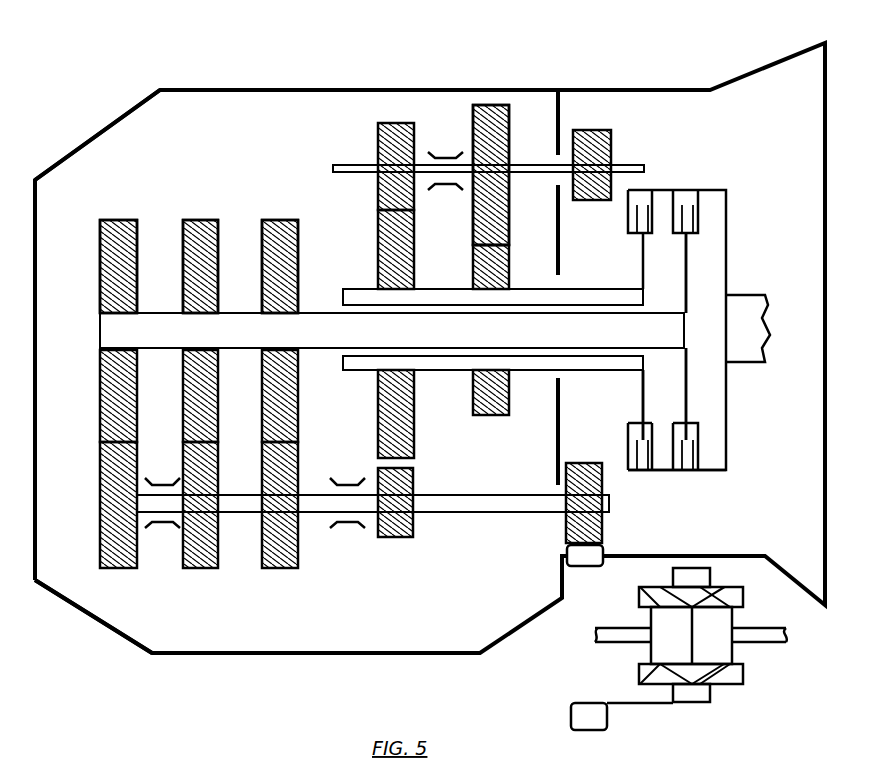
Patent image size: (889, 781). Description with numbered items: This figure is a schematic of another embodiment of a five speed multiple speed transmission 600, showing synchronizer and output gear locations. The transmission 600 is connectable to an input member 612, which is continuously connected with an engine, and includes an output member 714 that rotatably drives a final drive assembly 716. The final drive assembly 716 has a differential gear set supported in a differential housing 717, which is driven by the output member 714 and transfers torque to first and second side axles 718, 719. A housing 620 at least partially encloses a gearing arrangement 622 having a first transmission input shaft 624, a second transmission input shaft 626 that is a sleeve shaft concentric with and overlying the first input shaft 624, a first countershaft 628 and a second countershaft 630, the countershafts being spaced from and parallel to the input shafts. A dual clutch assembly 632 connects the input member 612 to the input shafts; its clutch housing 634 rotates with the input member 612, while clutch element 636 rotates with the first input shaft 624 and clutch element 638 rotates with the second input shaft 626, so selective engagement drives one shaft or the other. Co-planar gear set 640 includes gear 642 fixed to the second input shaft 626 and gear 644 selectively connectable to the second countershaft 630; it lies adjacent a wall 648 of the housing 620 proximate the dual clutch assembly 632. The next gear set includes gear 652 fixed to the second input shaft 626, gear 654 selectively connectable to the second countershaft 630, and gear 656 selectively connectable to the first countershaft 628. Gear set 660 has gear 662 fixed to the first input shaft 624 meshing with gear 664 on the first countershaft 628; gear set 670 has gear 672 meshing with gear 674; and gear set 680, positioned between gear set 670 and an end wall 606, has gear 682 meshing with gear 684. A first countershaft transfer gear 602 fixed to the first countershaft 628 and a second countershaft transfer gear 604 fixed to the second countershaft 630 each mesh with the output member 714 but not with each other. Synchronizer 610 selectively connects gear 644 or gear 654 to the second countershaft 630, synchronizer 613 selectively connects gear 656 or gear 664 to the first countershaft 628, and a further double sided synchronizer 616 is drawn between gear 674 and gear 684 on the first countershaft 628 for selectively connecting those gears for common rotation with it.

The multiple speed transmission 600 is at (665, 85).
The first countershaft transfer gear 602 is at (576, 462).
The second countershaft transfer gear 604 is at (607, 130).
The end wall 606 is at (80, 612).
The synchronizer 610 is at (445, 190).
The input shaft or member 612 is at (746, 364).
The synchronizer 613 is at (347, 480).
The synchronizer 616 is at (162, 480).
The housing 620 is at (78, 145).
The gearing arrangement 622 is at (213, 108).
The first transmission input shaft or member 624 is at (98, 322).
The second transmission input shaft or member 626 is at (343, 373).
The first countershaft 628 is at (505, 514).
The second countershaft 630 is at (367, 166).
The dual clutch assembly 632 is at (725, 188).
The clutch housing 634 is at (700, 472).
The first clutch element or hub 636 is at (690, 396).
The second clutch element or hub 638 is at (644, 380).
The co-planar gear set 640 is at (502, 73).
The gear 642 is at (511, 392).
The gear 644 is at (511, 185).
The wall 648 is at (586, 218).
The gear 652 is at (416, 402).
The gear 654 is at (397, 122).
The gear 656 is at (414, 528).
The co-planar gear set 660 is at (280, 208).
The gear 662 is at (260, 256).
The gear 664 is at (262, 560).
The co-planar gear set 670 is at (200, 208).
The gear 672 is at (181, 256).
The gear 674 is at (180, 545).
The co-planar gear set 680 is at (120, 208).
The gear 682 is at (98, 256).
The gear 684 is at (98, 528).
The output gear or member 714 is at (584, 568).
The final drive assembly 716 is at (722, 623).
The differential housing 717 is at (712, 578).
The first side axle 718 is at (763, 658).
The second side axle 719 is at (615, 658).